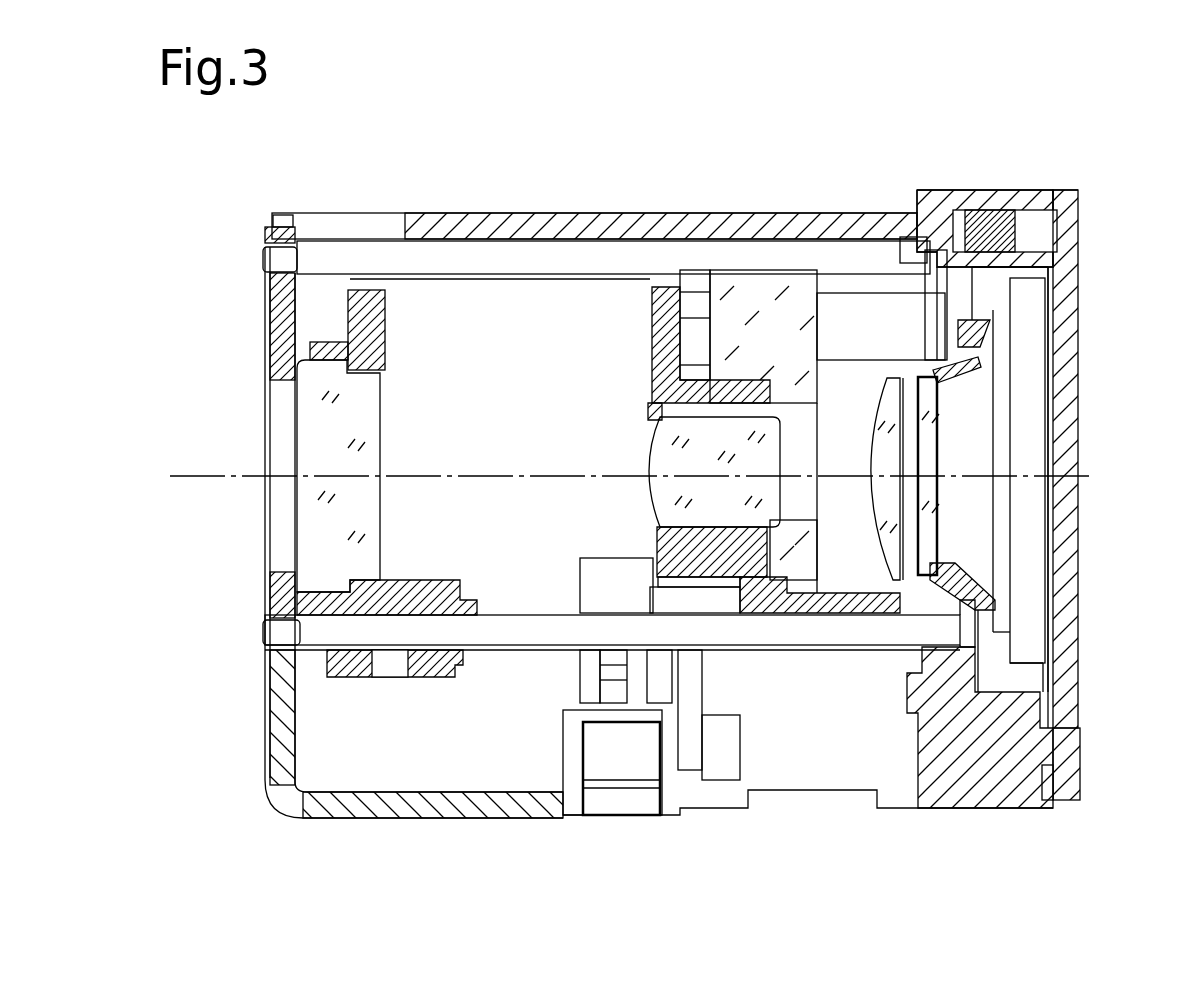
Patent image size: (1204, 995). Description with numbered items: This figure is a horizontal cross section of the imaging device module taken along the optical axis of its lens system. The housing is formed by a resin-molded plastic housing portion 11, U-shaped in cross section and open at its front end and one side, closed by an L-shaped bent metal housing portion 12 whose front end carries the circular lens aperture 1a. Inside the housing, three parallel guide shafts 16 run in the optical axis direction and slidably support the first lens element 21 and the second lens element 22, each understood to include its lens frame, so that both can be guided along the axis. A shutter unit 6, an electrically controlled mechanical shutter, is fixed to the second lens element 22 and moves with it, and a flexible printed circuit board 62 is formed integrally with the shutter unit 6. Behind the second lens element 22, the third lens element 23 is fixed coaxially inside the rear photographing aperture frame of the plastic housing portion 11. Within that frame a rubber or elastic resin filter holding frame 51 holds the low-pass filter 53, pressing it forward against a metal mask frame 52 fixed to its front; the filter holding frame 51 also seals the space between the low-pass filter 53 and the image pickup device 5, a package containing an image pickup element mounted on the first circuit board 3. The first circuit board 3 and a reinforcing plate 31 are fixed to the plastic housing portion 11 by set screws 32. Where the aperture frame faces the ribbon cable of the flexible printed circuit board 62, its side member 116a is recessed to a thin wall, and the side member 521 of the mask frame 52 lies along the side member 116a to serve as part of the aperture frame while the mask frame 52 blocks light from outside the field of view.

The lens aperture 1a is at (285, 570).
The first circuit board 3 is at (1053, 673).
The image pickup device 5 is at (1027, 410).
The shutter unit 6 is at (735, 313).
The plastic housing portion 11 is at (795, 224).
The metal housing portion 12 is at (342, 808).
The guide shaft 16 is at (538, 630).
The first lens element 21 is at (333, 377).
The second lens element 22 is at (667, 458).
The third lens element 23 is at (903, 500).
The reinforcing plate 31 is at (1063, 610).
The set screw 32 is at (1065, 236).
The filter holding frame 51 is at (958, 290).
The mask frame 52 is at (920, 367).
The low-pass filter 53 is at (927, 540).
The flexible printed circuit board 62 is at (877, 320).
The side member 116a is at (975, 320).
The side member 521 is at (1000, 350).